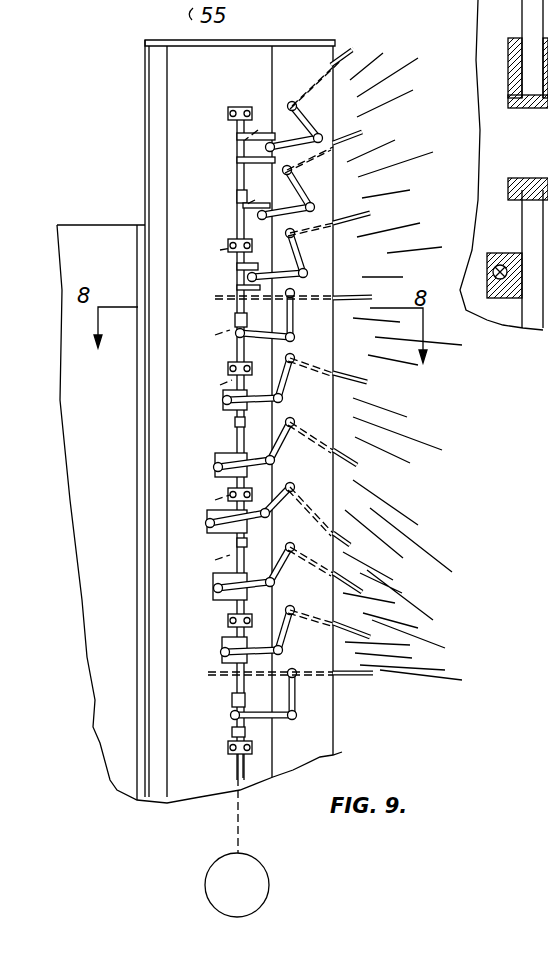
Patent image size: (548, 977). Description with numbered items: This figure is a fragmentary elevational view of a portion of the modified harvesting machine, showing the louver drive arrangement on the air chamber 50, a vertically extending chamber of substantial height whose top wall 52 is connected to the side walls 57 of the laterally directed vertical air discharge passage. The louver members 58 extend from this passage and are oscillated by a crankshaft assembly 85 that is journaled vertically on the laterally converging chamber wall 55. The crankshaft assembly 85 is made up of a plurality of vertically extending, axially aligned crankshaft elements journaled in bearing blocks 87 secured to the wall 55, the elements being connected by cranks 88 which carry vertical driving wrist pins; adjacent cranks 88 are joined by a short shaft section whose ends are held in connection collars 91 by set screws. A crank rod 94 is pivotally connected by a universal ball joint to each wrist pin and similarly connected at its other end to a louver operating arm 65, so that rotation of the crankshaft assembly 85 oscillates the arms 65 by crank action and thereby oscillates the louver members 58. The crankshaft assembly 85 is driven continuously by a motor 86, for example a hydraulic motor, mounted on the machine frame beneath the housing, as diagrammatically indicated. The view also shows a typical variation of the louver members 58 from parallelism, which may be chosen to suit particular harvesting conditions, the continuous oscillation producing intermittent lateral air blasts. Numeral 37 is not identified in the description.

The side panel 37 is at (80, 225).
The air chamber 50 is at (145, 57).
The top wall 52 is at (263, 44).
The rear wall 55 is at (218, 100).
The side wall 57 is at (320, 742).
The louver member 58 is at (350, 220).
The louver operating arm 65 is at (320, 137).
The crankshaft assembly 85 is at (222, 755).
The motor 86 is at (207, 872).
The bearing block 87 is at (230, 117).
The crank 88 is at (267, 140).
The connection collar 91 is at (508, 52).
The crank rod 94 is at (264, 418).